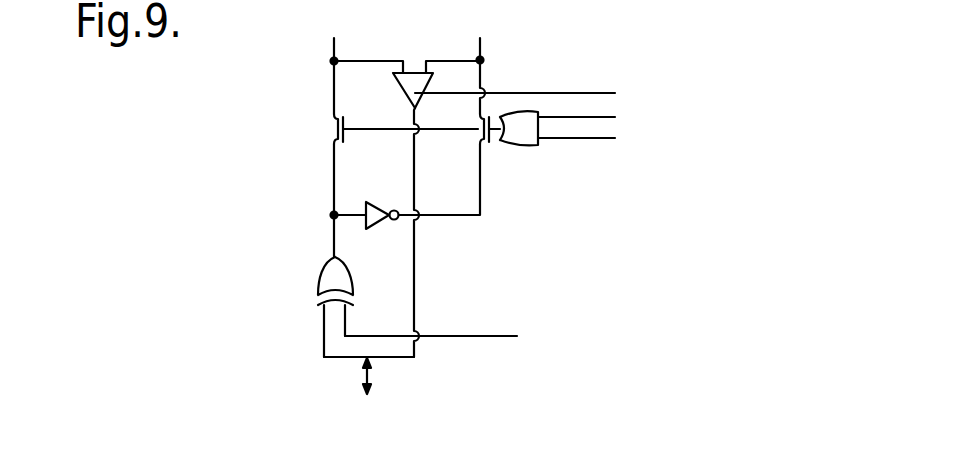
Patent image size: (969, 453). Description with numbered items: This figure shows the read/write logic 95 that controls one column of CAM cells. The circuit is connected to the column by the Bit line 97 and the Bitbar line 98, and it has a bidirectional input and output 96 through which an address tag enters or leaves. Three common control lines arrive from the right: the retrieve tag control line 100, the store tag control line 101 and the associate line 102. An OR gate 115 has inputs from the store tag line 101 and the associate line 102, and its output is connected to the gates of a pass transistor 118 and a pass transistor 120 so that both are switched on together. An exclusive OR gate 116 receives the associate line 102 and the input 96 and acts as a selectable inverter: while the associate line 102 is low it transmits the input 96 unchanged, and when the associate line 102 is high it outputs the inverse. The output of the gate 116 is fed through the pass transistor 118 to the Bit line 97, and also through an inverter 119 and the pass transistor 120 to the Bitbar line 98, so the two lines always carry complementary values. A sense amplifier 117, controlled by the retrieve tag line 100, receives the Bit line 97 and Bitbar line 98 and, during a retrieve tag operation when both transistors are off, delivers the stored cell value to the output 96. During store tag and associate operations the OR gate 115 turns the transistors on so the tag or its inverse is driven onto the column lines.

The read/write logic 95 is at (533, 53).
The bidirectional input and output 96 is at (365, 380).
The Bit line 97 is at (333, 93).
The Bitbar line 98 is at (478, 44).
The retrieve tag control line 100 is at (585, 93).
The store tag control line 101 is at (558, 117).
The associate line 102 is at (597, 138).
The OR gate 115 is at (533, 144).
The exclusive OR gate 116 is at (322, 282).
The sense amplifier 117 is at (410, 94).
The pass transistor 118 is at (343, 129).
The inverter 119 is at (376, 203).
The pass transistor 120 is at (483, 133).